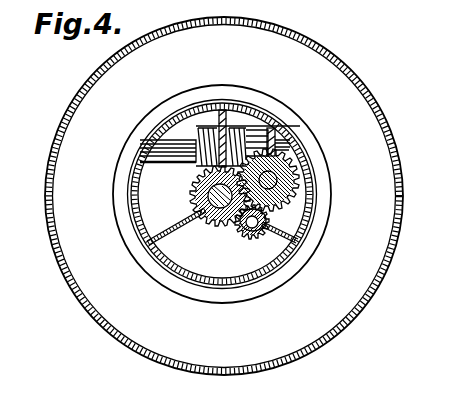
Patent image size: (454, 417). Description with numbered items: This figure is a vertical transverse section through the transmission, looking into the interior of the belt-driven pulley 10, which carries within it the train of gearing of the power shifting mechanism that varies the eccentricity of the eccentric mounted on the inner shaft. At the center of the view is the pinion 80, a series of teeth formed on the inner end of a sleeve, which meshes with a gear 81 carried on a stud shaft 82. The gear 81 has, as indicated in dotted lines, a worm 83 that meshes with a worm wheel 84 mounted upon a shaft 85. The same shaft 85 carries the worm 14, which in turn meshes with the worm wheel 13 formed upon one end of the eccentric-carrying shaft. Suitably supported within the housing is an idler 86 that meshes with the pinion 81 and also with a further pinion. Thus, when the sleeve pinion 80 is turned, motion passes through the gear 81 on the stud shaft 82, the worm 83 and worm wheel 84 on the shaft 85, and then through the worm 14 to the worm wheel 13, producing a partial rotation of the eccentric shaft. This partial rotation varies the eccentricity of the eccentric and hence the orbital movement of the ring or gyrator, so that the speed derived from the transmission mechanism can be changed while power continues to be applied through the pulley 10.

The pulley 10 is at (45, 209).
The worm wheel 13 is at (193, 182).
The worm 14 is at (236, 120).
The pinion 80 is at (197, 202).
The gear 81 is at (317, 217).
The stud shaft 82 is at (277, 175).
The worm 83 is at (307, 155).
The worm wheel 84 is at (283, 127).
The shaft 85 is at (263, 125).
The idler 86 is at (240, 240).